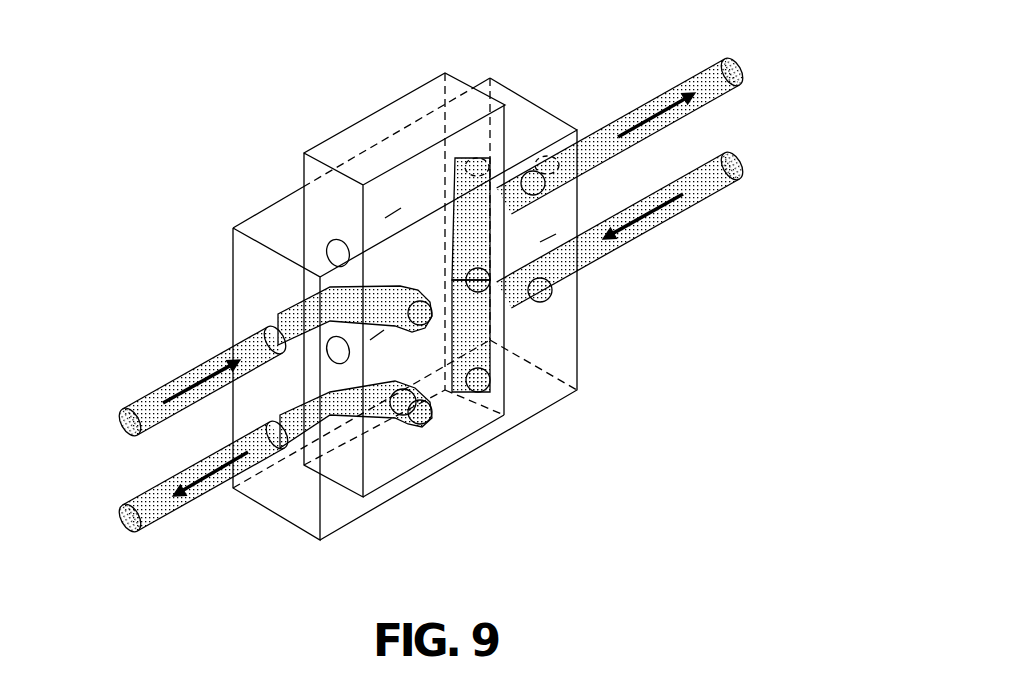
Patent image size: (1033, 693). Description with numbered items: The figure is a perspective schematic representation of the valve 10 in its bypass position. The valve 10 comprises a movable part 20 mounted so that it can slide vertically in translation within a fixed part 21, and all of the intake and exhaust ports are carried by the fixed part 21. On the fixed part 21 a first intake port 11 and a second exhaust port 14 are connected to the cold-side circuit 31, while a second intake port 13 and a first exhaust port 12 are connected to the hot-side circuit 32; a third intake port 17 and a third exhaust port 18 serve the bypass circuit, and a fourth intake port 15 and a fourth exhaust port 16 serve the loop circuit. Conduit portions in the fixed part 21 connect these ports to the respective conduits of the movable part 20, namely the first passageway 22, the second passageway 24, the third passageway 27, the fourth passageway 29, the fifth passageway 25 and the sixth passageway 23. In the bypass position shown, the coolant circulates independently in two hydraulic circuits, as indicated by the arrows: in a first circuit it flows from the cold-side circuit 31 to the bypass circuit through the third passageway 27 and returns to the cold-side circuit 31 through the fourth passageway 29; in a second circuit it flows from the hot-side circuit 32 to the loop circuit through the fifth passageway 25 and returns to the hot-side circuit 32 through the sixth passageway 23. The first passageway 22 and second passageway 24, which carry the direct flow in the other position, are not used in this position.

The valve 10 is at (179, 110).
The first intake port 11 is at (265, 325).
The first exhaust port 12 is at (545, 165).
The second intake port 13 is at (555, 292).
The second exhaust port 14 is at (277, 447).
The fourth intake port 15 is at (548, 238).
The fourth exhaust port 16 is at (485, 385).
The third intake port 17 is at (422, 425).
The third exhaust port 18 is at (418, 298).
The movable part 20 is at (408, 107).
The fixed part 21 is at (520, 107).
The first passageway 22 is at (393, 213).
The sixth passageway 23 is at (468, 225).
The second passageway 24 is at (377, 335).
The fifth passageway 25 is at (490, 345).
The third passageway 27 is at (370, 300).
The fourth passageway 29 is at (382, 397).
The cold-side circuit 31 is at (163, 390).
The hot-side circuit 32 is at (678, 90).